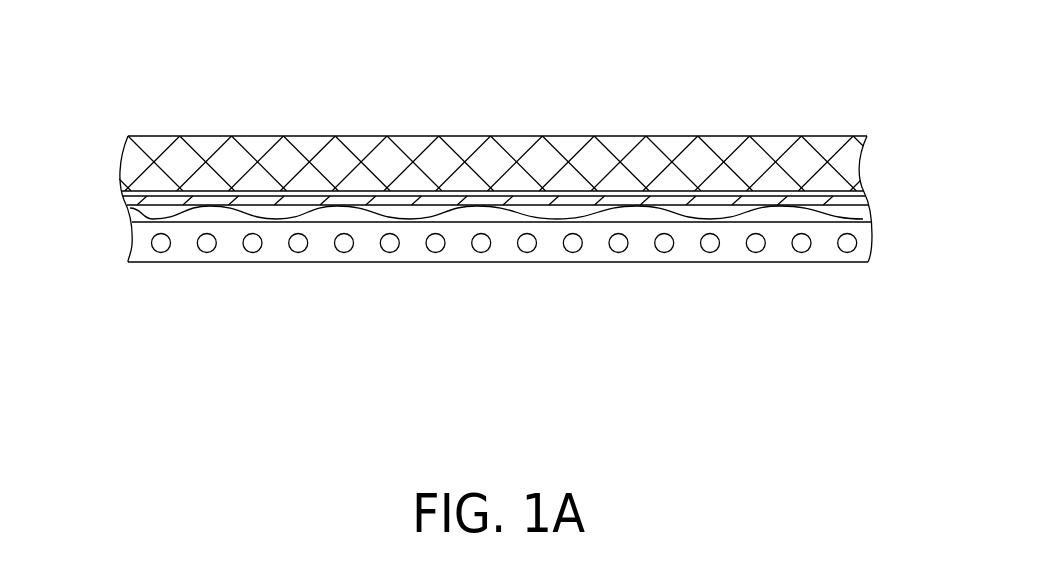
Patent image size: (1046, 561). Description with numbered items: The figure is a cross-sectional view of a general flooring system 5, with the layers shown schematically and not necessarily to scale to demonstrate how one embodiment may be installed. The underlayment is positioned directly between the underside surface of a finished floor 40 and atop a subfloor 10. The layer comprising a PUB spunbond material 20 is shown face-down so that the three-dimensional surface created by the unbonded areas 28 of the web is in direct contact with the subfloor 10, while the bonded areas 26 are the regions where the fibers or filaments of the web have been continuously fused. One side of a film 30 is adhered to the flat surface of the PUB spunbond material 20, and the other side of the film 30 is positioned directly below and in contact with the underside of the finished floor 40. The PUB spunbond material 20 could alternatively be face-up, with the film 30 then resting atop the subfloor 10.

The general flooring system 5 is at (651, 83).
The finished floor 40 is at (167, 143).
The film 30 is at (127, 200).
The PUB spunbond material 20 is at (880, 205).
The bonded areas 26 is at (487, 207).
The unbonded areas 28 is at (712, 220).
The subfloor 10 is at (823, 250).